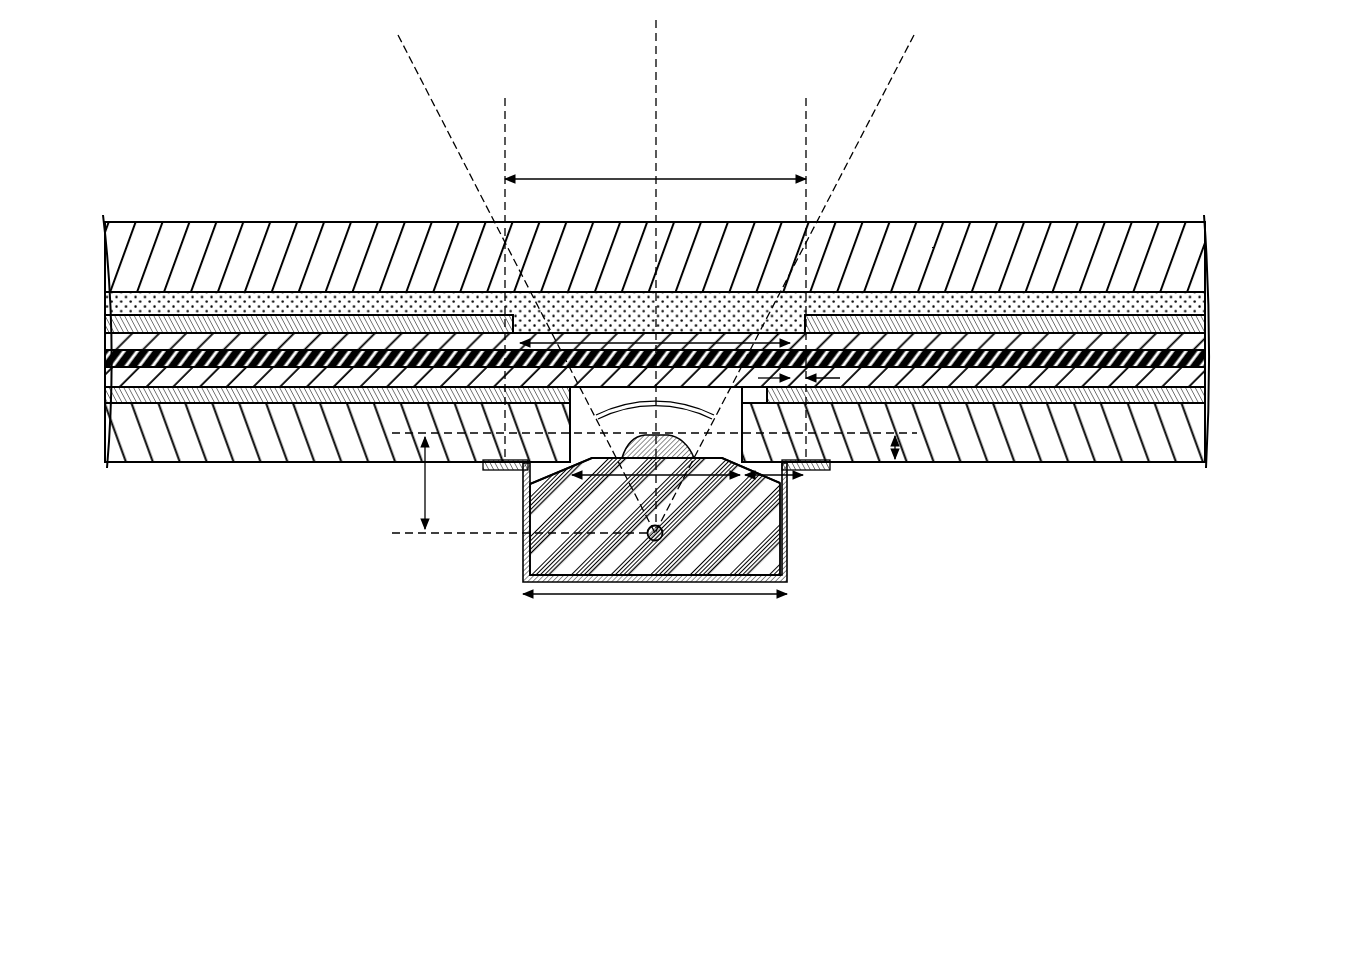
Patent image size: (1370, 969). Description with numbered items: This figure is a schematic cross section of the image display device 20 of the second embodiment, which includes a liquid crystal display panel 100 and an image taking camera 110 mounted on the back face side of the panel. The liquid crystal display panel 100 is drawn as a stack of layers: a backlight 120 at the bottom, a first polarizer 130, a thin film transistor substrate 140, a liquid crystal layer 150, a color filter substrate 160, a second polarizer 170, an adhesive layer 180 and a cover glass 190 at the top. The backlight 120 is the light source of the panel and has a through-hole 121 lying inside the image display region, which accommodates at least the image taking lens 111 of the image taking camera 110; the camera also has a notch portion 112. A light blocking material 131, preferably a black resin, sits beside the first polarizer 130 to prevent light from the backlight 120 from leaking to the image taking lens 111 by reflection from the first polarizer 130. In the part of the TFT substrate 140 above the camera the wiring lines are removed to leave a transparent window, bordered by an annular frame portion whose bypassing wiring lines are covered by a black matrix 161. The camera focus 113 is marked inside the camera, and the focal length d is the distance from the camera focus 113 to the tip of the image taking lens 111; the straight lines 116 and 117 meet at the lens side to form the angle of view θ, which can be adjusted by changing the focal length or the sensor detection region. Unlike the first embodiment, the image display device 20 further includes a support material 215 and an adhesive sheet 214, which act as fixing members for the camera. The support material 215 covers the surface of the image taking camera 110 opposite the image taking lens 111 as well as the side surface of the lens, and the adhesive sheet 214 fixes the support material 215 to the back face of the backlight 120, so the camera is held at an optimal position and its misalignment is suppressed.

The image display device 20 is at (165, 206).
The liquid crystal display panel 100 is at (1287, 218).
The image taking camera 110 is at (787, 568).
The image taking lens 111 is at (615, 452).
The notch portion 112 is at (590, 458).
The camera focus 113 is at (661, 529).
The straight line 116 is at (442, 113).
The straight line 117 is at (875, 108).
The backlight 120 is at (1180, 432).
The through-hole 121 is at (718, 443).
The first polarizer 130 is at (1180, 395).
The light blocking material 131 is at (560, 392).
The TFT substrate 140 is at (1180, 376).
The liquid crystal layer 150 is at (1193, 358).
The color filter substrate 160 is at (1180, 342).
The black matrix 161 is at (796, 345).
The second polarizer 170 is at (1180, 325).
The adhesive layer 180 is at (1180, 307).
The cover glass 190 is at (1180, 258).
The adhesive sheet 214 is at (833, 465).
The support material 215 is at (523, 570).